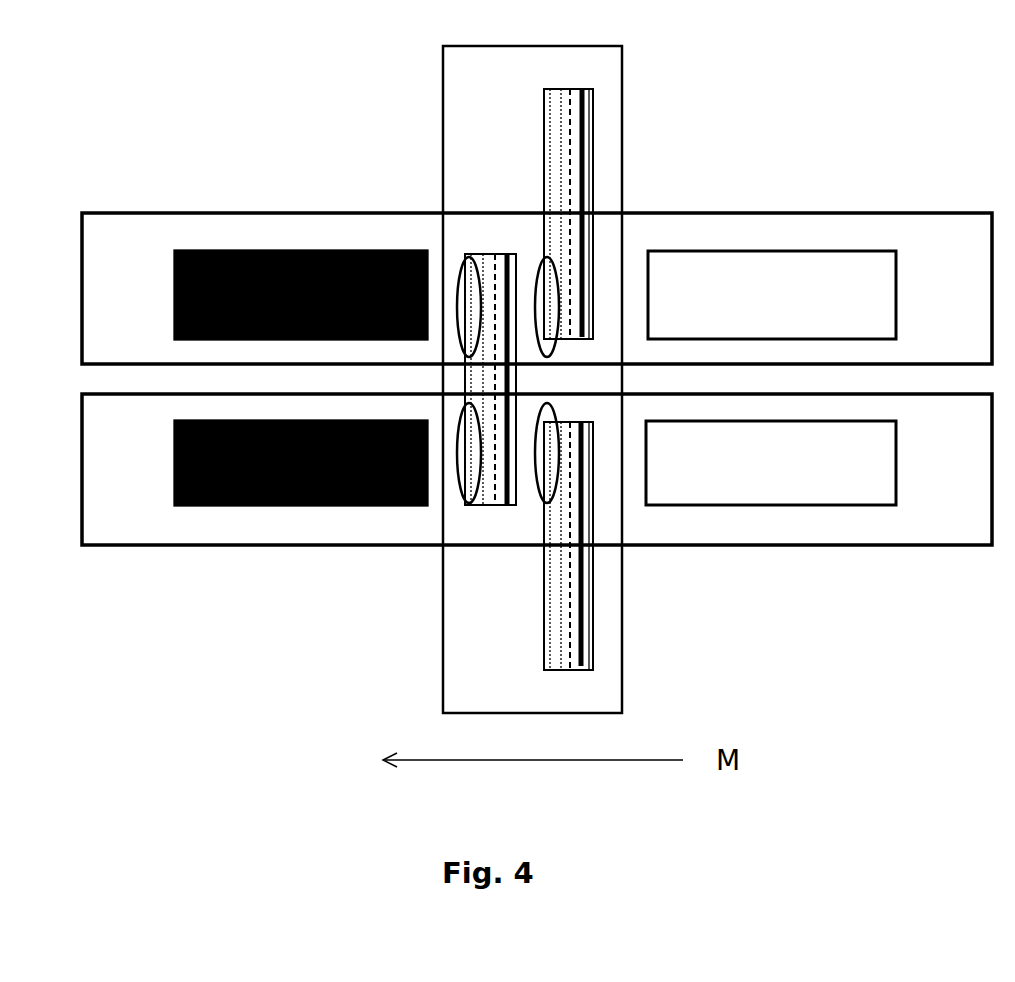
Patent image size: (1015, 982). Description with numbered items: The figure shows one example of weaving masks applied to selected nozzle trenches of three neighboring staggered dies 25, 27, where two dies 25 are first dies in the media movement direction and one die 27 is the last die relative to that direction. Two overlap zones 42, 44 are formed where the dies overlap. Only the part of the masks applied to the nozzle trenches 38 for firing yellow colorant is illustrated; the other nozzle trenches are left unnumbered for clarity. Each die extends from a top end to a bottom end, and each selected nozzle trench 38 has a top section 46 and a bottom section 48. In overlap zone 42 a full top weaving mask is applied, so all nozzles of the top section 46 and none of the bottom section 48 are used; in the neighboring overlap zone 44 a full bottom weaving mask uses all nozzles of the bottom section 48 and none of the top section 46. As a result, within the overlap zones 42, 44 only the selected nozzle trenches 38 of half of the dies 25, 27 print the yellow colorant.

The first dies 25 is at (593, 144).
The last die 27 is at (472, 505).
The nozzle trench 38 is at (548, 120).
The overlap zone 42 is at (925, 237).
The overlap zone 44 is at (937, 512).
The top section 46 is at (470, 253).
The bottom section 48 is at (556, 300).